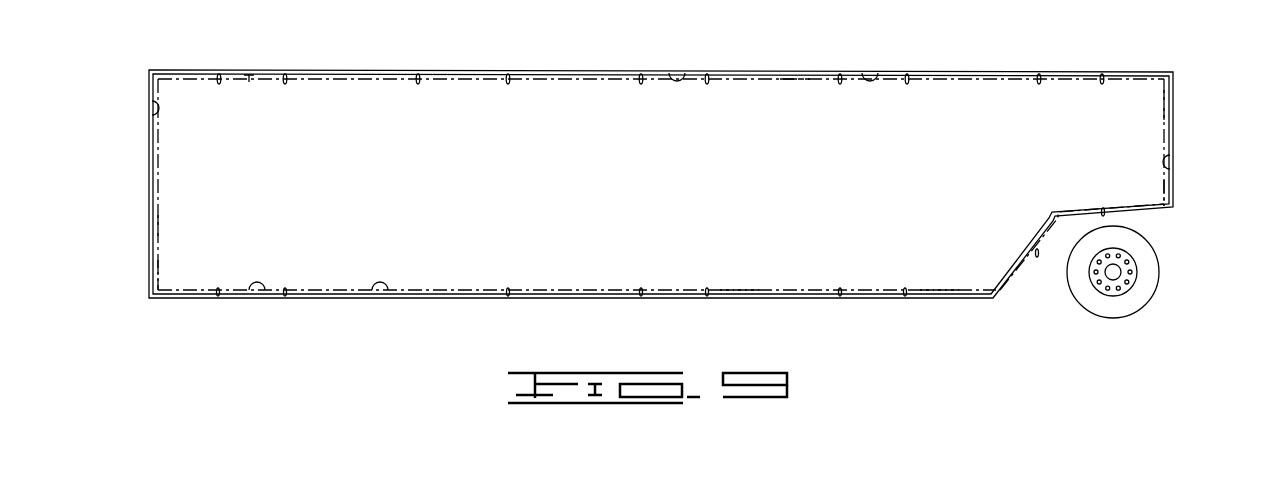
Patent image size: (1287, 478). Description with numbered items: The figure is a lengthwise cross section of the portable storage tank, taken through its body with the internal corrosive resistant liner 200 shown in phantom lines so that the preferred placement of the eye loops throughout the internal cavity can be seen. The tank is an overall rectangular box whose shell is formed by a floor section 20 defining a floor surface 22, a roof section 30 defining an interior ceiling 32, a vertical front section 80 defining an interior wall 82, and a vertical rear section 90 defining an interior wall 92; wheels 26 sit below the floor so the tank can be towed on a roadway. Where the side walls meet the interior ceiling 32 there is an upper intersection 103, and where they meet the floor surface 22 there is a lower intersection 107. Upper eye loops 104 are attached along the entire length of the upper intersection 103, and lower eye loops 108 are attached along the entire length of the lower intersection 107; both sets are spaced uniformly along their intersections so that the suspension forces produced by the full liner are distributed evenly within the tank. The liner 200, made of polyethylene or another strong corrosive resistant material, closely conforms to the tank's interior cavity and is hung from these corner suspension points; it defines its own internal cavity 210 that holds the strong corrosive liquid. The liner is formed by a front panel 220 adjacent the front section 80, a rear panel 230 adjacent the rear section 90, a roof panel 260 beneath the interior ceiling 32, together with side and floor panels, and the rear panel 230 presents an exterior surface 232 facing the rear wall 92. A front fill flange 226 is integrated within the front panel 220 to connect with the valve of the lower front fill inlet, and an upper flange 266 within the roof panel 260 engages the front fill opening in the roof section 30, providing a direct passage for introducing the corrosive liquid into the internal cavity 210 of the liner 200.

The floor section 20 is at (330, 301).
The floor surface 22 is at (247, 291).
The wheels 26 is at (1140, 285).
The roof section 30 is at (548, 72).
The interior ceiling 32 is at (670, 74).
The vertical front section 80 is at (150, 158).
The interior wall 82 is at (156, 101).
The vertical rear section 90 is at (1175, 135).
The interior wall 92 is at (1168, 165).
The upper intersection 103 is at (878, 82).
The upper eye loops 104 is at (418, 72).
The lower intersection 107 is at (380, 285).
The lower eye loops 108 is at (513, 291).
The internal corrosive resistant liner 200 is at (930, 256).
The internal cavity 210 is at (735, 238).
The front panel 220 is at (158, 273).
The front fill flange 226 is at (152, 225).
The rear panel 230 is at (1165, 195).
The exterior surface 232 is at (1165, 105).
The roof panel 260 is at (793, 80).
The upper flange 266 is at (257, 72).